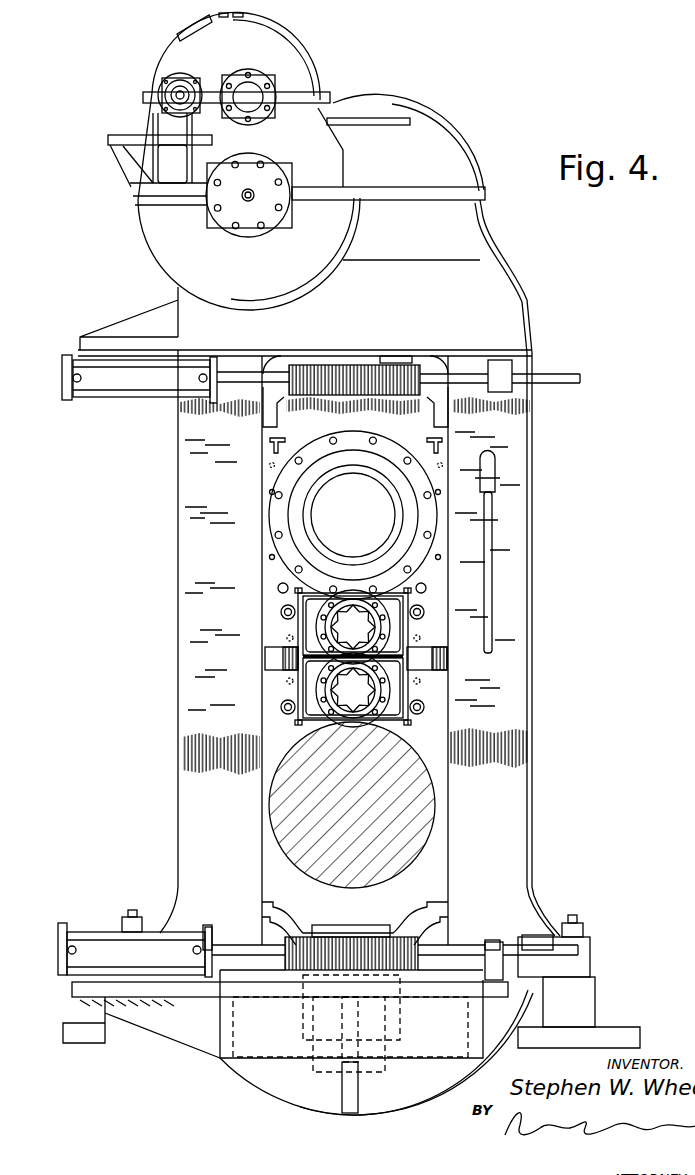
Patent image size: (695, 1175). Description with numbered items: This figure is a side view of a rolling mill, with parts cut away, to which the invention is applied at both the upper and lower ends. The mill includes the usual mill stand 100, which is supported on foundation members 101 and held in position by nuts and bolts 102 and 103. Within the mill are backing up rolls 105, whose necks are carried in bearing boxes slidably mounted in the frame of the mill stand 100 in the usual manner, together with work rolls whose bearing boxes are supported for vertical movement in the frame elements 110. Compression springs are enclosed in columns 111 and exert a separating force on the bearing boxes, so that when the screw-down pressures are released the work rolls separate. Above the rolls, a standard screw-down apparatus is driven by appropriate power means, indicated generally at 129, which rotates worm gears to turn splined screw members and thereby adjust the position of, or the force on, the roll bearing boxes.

The mill stand 100 is at (525, 641).
The foundation members 101 is at (590, 995).
The nuts and bolts 102 is at (121, 924).
The nuts and bolts 103 is at (133, 909).
The backing up rolls 105 is at (422, 789).
The frame elements 110 is at (408, 628).
The columns 111 is at (266, 658).
The power means 129 is at (126, 219).